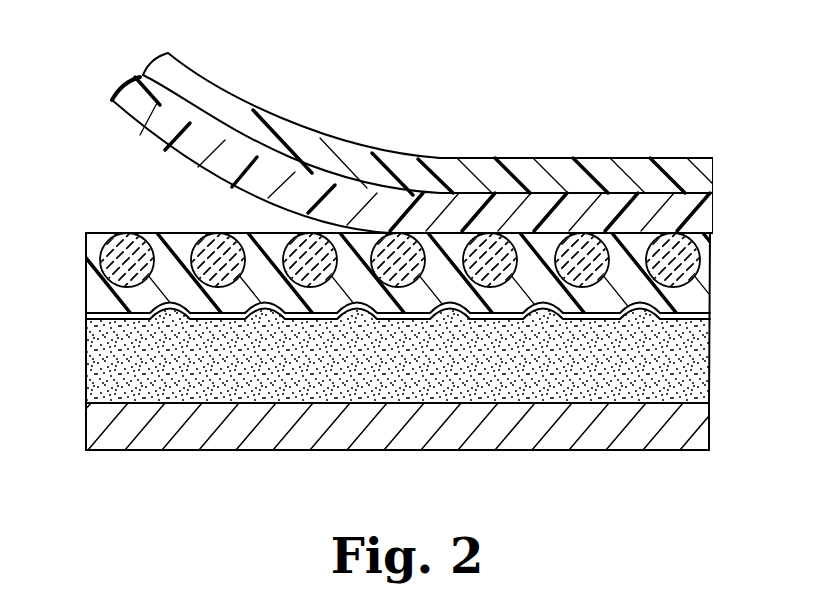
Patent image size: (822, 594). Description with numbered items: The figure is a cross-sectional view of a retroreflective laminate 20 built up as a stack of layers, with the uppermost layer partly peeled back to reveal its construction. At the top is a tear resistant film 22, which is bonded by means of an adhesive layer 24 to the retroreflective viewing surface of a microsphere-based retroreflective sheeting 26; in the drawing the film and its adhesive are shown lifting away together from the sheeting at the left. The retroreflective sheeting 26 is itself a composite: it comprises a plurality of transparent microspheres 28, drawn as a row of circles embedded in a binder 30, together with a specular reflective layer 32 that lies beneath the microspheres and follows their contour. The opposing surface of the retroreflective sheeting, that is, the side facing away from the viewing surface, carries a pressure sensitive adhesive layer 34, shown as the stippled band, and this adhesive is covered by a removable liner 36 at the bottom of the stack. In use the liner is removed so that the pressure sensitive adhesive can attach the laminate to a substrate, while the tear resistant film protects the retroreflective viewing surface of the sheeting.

The retroreflective laminate 20 is at (542, 108).
The tear resistant film 22 is at (197, 76).
The adhesive layer 24 is at (131, 126).
The microsphere-based retroreflective sheeting 26 is at (400, 290).
The transparent microspheres 28 is at (193, 245).
The binder 30 is at (98, 295).
The specular reflective layer 32 is at (480, 318).
The pressure sensitive adhesive layer 34 is at (680, 369).
The removable liner 36 is at (312, 432).